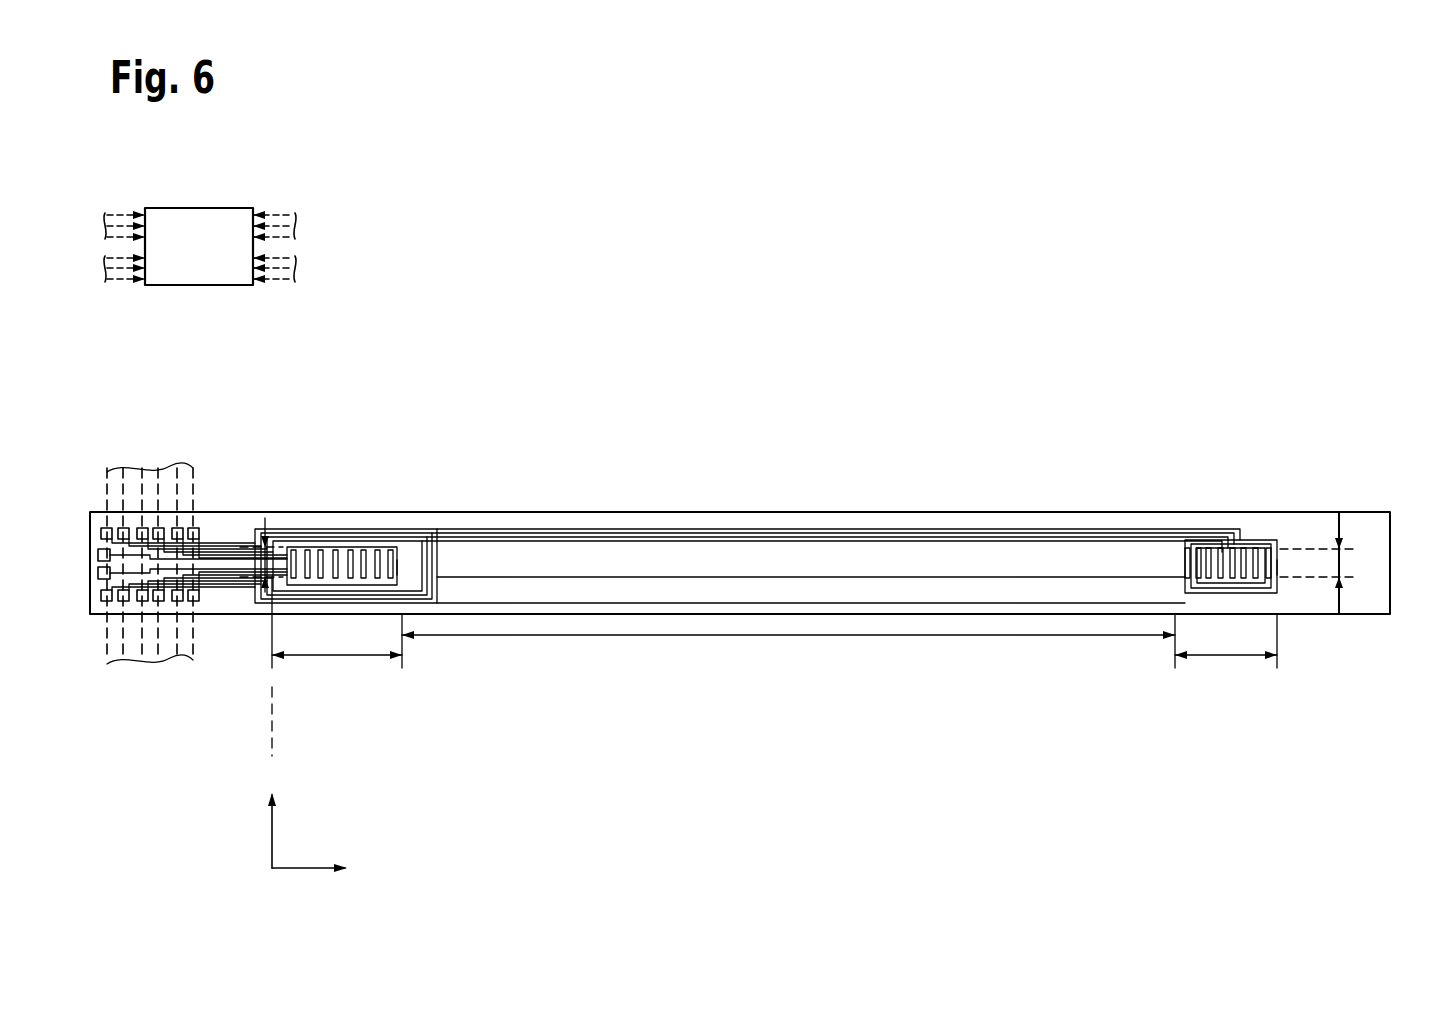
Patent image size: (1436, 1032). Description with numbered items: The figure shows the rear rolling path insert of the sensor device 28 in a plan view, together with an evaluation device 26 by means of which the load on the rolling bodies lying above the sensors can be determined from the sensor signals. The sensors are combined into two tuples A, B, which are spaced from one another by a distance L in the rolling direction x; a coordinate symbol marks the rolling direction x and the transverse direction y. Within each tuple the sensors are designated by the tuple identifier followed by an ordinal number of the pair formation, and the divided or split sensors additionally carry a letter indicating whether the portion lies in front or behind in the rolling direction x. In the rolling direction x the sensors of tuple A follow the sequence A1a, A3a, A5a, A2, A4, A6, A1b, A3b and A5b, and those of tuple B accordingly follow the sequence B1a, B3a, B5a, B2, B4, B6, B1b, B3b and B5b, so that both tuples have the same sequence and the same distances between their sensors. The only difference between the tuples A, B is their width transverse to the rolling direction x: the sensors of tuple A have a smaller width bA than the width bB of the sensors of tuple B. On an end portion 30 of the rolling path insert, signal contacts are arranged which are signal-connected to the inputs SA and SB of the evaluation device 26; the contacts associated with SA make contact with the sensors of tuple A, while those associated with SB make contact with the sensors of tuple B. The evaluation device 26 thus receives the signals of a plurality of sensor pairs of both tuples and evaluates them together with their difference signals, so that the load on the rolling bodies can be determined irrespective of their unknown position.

The evaluation device 26 is at (192, 230).
The sensor device 28 is at (905, 288).
The end portion 30 is at (133, 757).
The input SA is at (116, 222).
The input SB is at (282, 222).
The sensor portion A1a is at (293, 553).
The sensor portion A3a is at (307, 553).
The sensor portion A5a is at (320, 553).
The sensor A2 is at (335, 553).
The sensor A4 is at (350, 553).
The sensor A6 is at (363, 553).
The sensor portion A1b is at (377, 553).
The sensor portion A3b is at (392, 553).
The sensor portion A5b is at (400, 563).
The sensor portion B1a is at (1187, 553).
The sensor portion B3a is at (1198, 553).
The sensor portion B5a is at (1208, 553).
The sensor B2 is at (1220, 553).
The sensor B4 is at (1232, 553).
The sensor B6 is at (1243, 553).
The sensor portion B1b is at (1255, 553).
The sensor portion B3b is at (1270, 555).
The sensor portion B5b is at (1280, 565).
The width bA is at (268, 561).
The width bB is at (1340, 562).
The tuple A is at (337, 666).
The tuple B is at (1226, 663).
The distance L is at (788, 644).
The rolling direction x is at (320, 879).
The y axis y is at (257, 818).